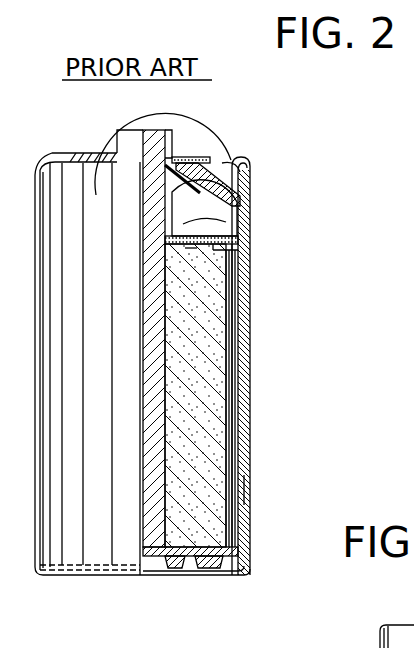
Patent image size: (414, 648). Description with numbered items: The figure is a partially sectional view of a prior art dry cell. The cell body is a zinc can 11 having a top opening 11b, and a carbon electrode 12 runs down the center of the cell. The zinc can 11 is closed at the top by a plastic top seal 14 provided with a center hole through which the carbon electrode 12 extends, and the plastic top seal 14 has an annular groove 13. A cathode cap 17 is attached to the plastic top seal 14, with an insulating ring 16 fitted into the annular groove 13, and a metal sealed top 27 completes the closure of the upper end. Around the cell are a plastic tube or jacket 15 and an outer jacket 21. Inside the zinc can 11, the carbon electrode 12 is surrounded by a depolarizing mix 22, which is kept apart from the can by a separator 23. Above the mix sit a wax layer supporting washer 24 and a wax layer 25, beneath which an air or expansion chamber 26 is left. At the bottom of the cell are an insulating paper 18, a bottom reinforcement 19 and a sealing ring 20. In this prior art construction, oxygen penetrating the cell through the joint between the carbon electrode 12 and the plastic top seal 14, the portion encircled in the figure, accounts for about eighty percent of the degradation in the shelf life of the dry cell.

The zinc can 11 is at (249, 290).
The top opening 11b is at (241, 206).
The carbon electrode 12 is at (150, 196).
The annular groove 13 is at (175, 175).
The plastic top seal 14 is at (243, 184).
The plastic tube or jacket 15 is at (245, 394).
The insulating ring 16 is at (179, 158).
The cathode cap 17 is at (153, 130).
The insulating paper 18 is at (180, 556).
The bottom reinforcement 19 is at (205, 568).
The sealing ring 20 is at (238, 572).
The outer jacket 21 is at (247, 490).
The depolarizing mix 22 is at (200, 327).
The separator 23 is at (232, 362).
The wax layer supporting washer 24 is at (191, 248).
The wax layer 25 is at (204, 208).
The air or expansion chamber 26 is at (240, 240).
The metal sealed top 27 is at (209, 160).